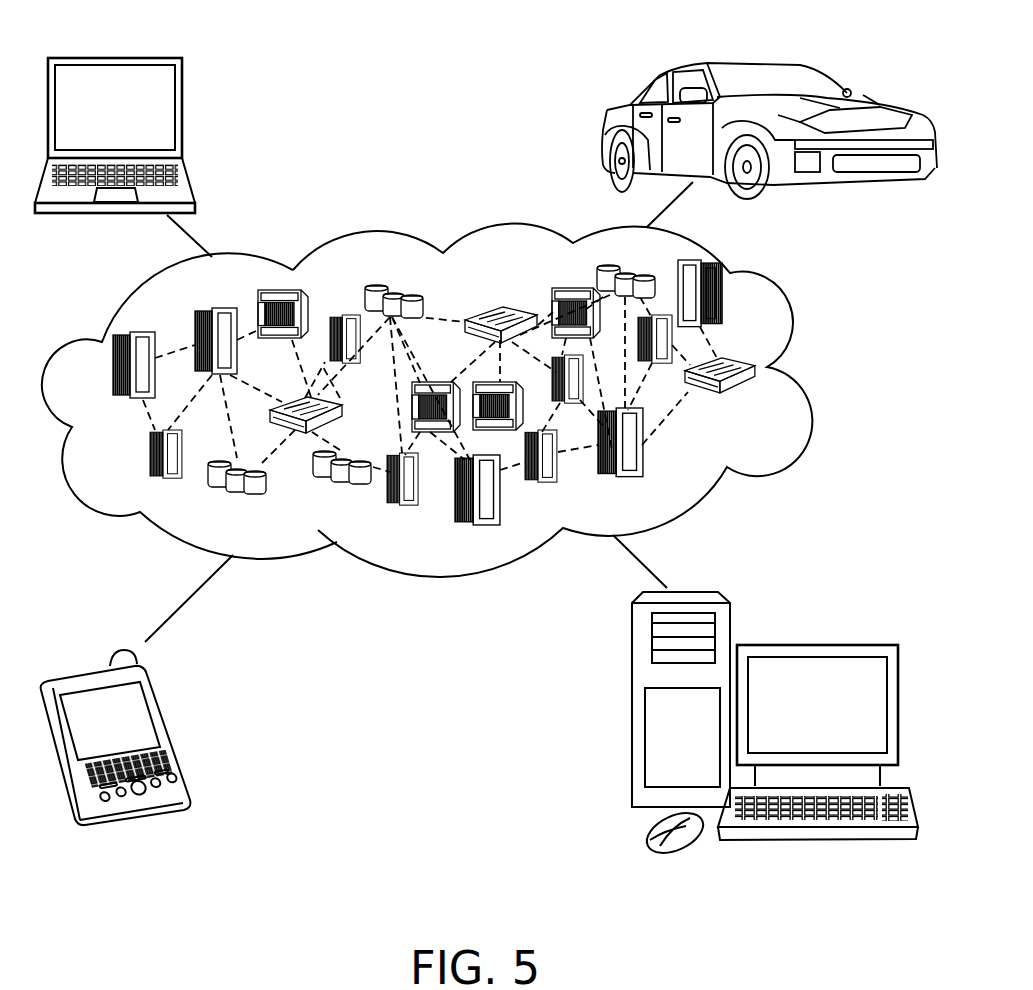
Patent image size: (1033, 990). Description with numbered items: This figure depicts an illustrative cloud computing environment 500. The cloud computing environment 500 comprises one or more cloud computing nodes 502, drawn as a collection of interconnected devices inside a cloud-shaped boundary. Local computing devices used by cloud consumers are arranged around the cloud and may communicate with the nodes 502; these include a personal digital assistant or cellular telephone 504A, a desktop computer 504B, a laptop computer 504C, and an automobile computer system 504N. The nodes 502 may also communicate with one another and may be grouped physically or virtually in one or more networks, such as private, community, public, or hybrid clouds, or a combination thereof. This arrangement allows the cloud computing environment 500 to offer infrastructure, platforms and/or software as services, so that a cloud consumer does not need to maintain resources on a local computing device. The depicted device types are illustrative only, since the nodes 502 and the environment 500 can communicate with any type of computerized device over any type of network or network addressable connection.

The cloud computing environment 500 is at (791, 360).
The cloud computing nodes 502 is at (762, 403).
The personal digital assistant (PDA) or cellular telephone 504A is at (160, 702).
The desktop computer 504B is at (802, 645).
The laptop computer 504C is at (182, 95).
The automobile computer system 504N is at (604, 130).